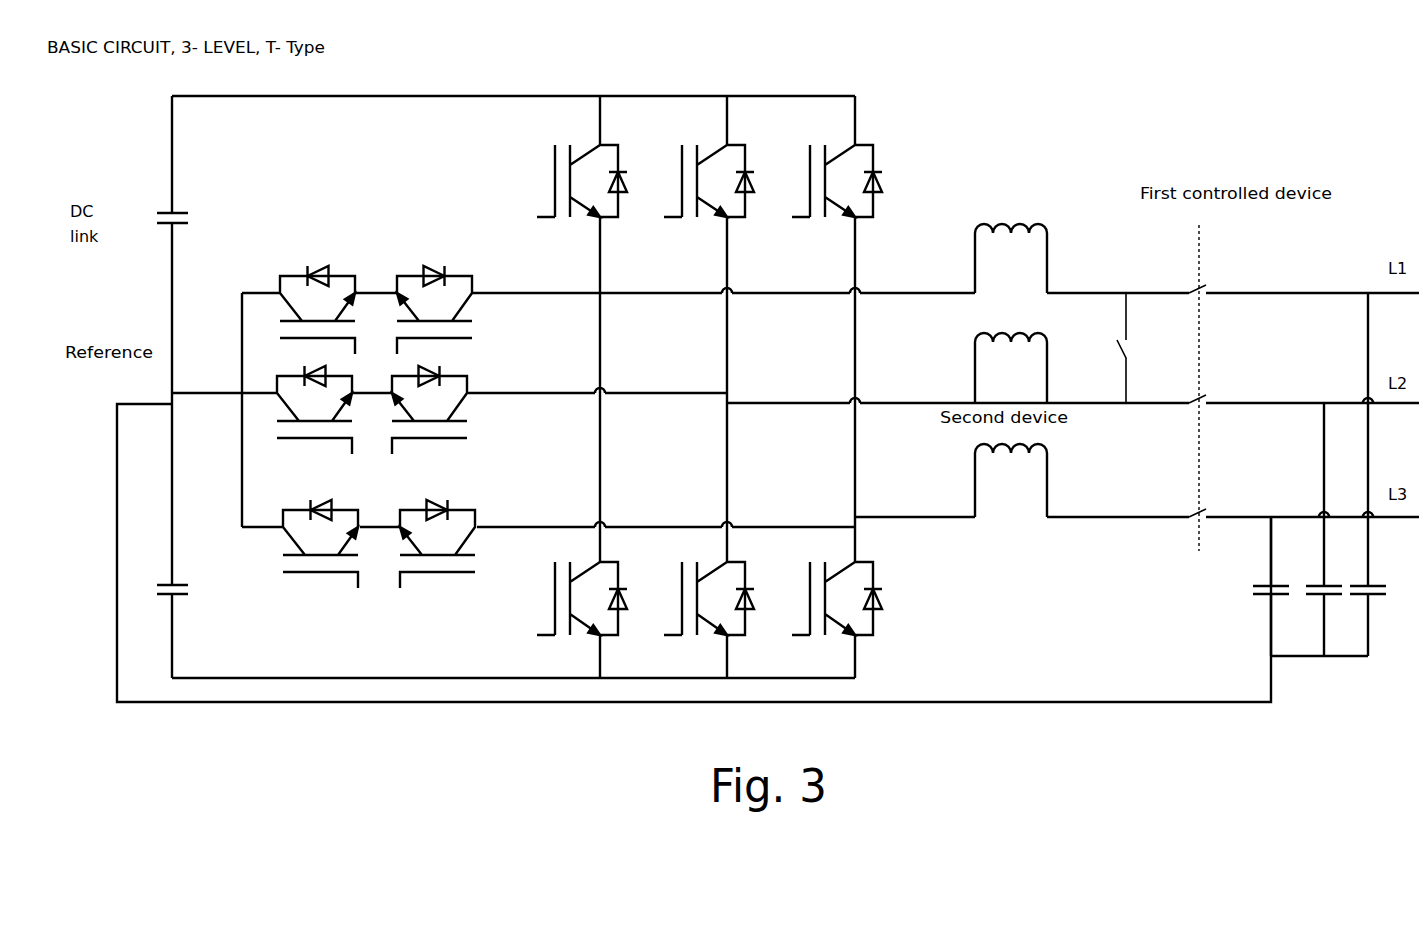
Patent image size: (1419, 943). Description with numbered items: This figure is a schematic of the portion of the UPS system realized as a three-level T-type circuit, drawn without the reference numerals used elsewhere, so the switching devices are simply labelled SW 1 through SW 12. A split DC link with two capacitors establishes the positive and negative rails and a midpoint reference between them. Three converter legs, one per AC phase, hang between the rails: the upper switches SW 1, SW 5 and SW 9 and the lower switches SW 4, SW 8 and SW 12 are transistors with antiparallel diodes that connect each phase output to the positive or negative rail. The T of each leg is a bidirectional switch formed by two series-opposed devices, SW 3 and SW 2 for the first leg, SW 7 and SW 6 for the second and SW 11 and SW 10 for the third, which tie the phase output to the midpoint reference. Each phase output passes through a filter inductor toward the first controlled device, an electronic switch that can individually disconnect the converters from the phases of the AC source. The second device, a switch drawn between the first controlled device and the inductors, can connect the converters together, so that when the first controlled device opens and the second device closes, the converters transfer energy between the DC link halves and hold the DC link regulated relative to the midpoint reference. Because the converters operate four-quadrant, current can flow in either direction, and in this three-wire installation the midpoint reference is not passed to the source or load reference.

The UPS device 1 is at (582, 165).
The switch SW 2 (bidirectional midpoint switch, leg 1) 2 is at (434, 297).
The AC source 3 is at (317, 297).
The switch SW 4 (lower IGBT, leg 1) 4 is at (582, 614).
The first converter assembly 5 is at (709, 165).
The first converter 6 is at (429, 423).
The DC link 7 is at (314, 423).
The midpoint reference 8 is at (709, 614).
The switch SW 9 (upper IGBT, leg 3) 9 is at (837, 165).
The switch SW 10 (bidirectional midpoint switch, leg 3) 10 is at (437, 557).
The switch SW 11 (bidirectional midpoint switch, leg 3) 11 is at (320, 557).
The switch SW 12 (lower IGBT, leg 3) 12 is at (836, 614).